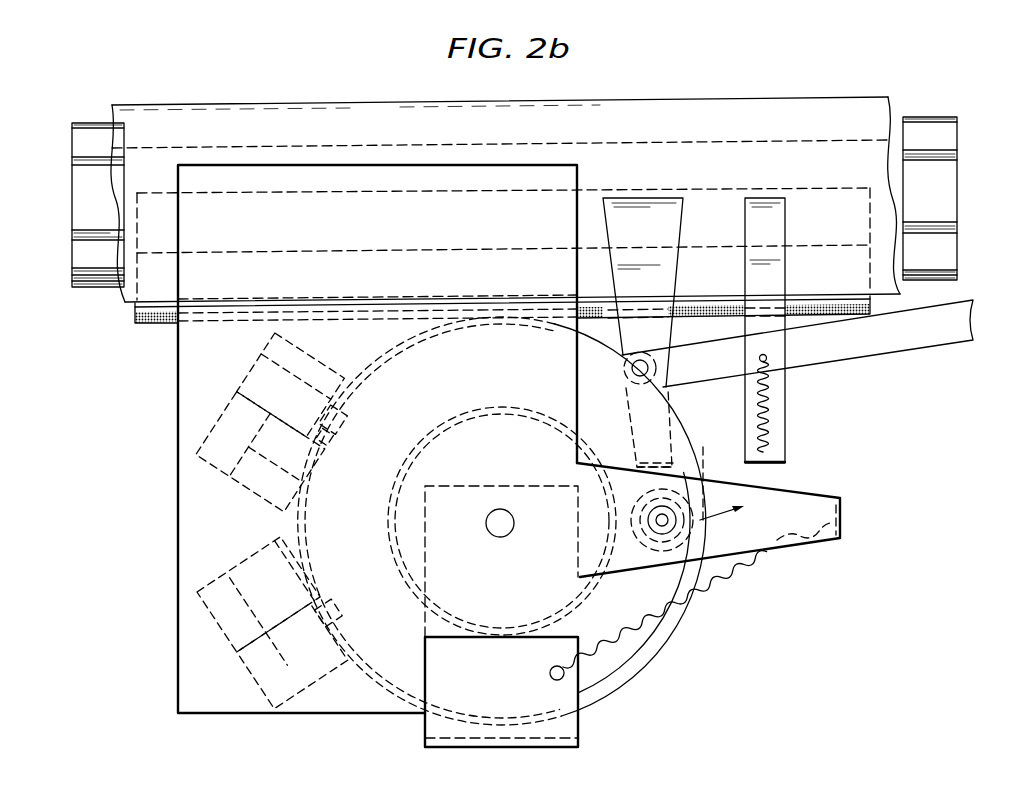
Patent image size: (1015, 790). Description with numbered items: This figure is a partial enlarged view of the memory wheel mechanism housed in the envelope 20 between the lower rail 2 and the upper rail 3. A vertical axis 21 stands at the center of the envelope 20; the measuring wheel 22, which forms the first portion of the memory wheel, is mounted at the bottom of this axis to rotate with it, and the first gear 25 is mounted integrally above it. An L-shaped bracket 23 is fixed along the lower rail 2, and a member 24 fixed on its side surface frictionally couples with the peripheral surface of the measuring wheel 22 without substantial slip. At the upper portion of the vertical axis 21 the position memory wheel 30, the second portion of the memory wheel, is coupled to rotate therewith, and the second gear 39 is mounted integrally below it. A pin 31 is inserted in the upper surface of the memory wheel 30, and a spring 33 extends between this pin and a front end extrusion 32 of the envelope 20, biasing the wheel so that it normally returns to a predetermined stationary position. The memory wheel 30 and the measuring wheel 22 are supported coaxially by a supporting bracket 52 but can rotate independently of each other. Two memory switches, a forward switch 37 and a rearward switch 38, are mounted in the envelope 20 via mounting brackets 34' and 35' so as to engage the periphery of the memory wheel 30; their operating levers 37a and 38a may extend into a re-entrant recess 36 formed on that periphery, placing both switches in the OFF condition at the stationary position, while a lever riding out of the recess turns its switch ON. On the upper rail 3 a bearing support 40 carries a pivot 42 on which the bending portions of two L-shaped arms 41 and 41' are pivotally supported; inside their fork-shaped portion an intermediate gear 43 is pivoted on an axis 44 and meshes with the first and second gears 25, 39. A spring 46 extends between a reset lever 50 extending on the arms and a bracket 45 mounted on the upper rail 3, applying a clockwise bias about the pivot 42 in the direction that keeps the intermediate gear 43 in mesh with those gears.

The lower rail 2 is at (80, 288).
The upper rail 3 is at (386, 122).
The envelope 20 is at (252, 715).
The vertical axis 21 is at (511, 533).
The measuring wheel 22 is at (613, 696).
The bracket 23 is at (135, 312).
The member 24 is at (150, 325).
The first gear 25 is at (505, 396).
The second gear 39 is at (502, 521).
The position memory wheel 30 is at (620, 653).
The pin 31 is at (550, 673).
The front end extrusion 32 is at (842, 534).
The spring 33 is at (763, 552).
The mounting bracket 34' is at (303, 383).
The mounting bracket 35' is at (292, 681).
The re-entrant recess 36 is at (403, 365).
The memory switch 37 is at (255, 447).
The operating lever 37a is at (338, 437).
The memory switch 38 is at (253, 572).
The operating lever 38a is at (336, 617).
The bearing support 40 is at (666, 262).
The L-shaped arm 41 is at (679, 455).
The L-shaped arm 41' is at (688, 448).
The vertical axis 42 is at (656, 368).
The intermediate gear 43 is at (672, 530).
The axis 44 is at (688, 552).
The bracket 45 is at (786, 234).
The spring 46 is at (776, 403).
The reset lever 50 is at (948, 333).
The supporting bracket 52 is at (557, 592).